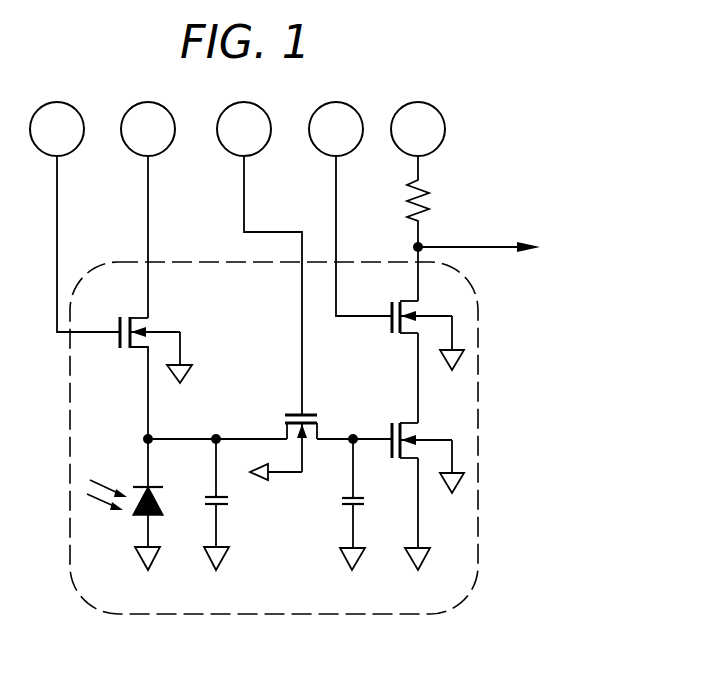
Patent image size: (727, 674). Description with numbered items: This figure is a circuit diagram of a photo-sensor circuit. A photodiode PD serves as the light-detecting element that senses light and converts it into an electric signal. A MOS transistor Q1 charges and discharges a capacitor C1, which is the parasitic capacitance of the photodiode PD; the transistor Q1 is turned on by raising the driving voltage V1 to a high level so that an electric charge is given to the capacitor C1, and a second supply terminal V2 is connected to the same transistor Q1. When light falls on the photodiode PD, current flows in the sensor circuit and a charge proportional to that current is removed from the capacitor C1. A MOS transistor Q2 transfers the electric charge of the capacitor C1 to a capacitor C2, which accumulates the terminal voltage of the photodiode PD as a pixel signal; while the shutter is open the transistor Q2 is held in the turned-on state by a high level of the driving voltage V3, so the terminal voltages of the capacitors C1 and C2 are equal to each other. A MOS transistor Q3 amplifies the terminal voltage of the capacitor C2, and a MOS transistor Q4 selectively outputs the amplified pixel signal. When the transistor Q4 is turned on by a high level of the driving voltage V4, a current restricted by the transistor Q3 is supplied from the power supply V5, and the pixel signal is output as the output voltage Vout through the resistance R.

The driving voltage V1 is at (75, 217).
The second voltage terminal V2 is at (148, 210).
The driving voltage V3 is at (259, 258).
The driving voltage V4 is at (350, 209).
The power supply V5 is at (418, 139).
The resistance R is at (429, 212).
The output voltage Vout is at (504, 247).
The MOS transistor Q1 is at (152, 363).
The MOS transistor Q2 is at (283, 432).
The MOS transistor Q3 is at (420, 444).
The MOS transistor Q4 is at (420, 321).
The photodiode PD is at (125, 504).
The capacitor C1 is at (207, 504).
The capacitor C2 is at (341, 504).